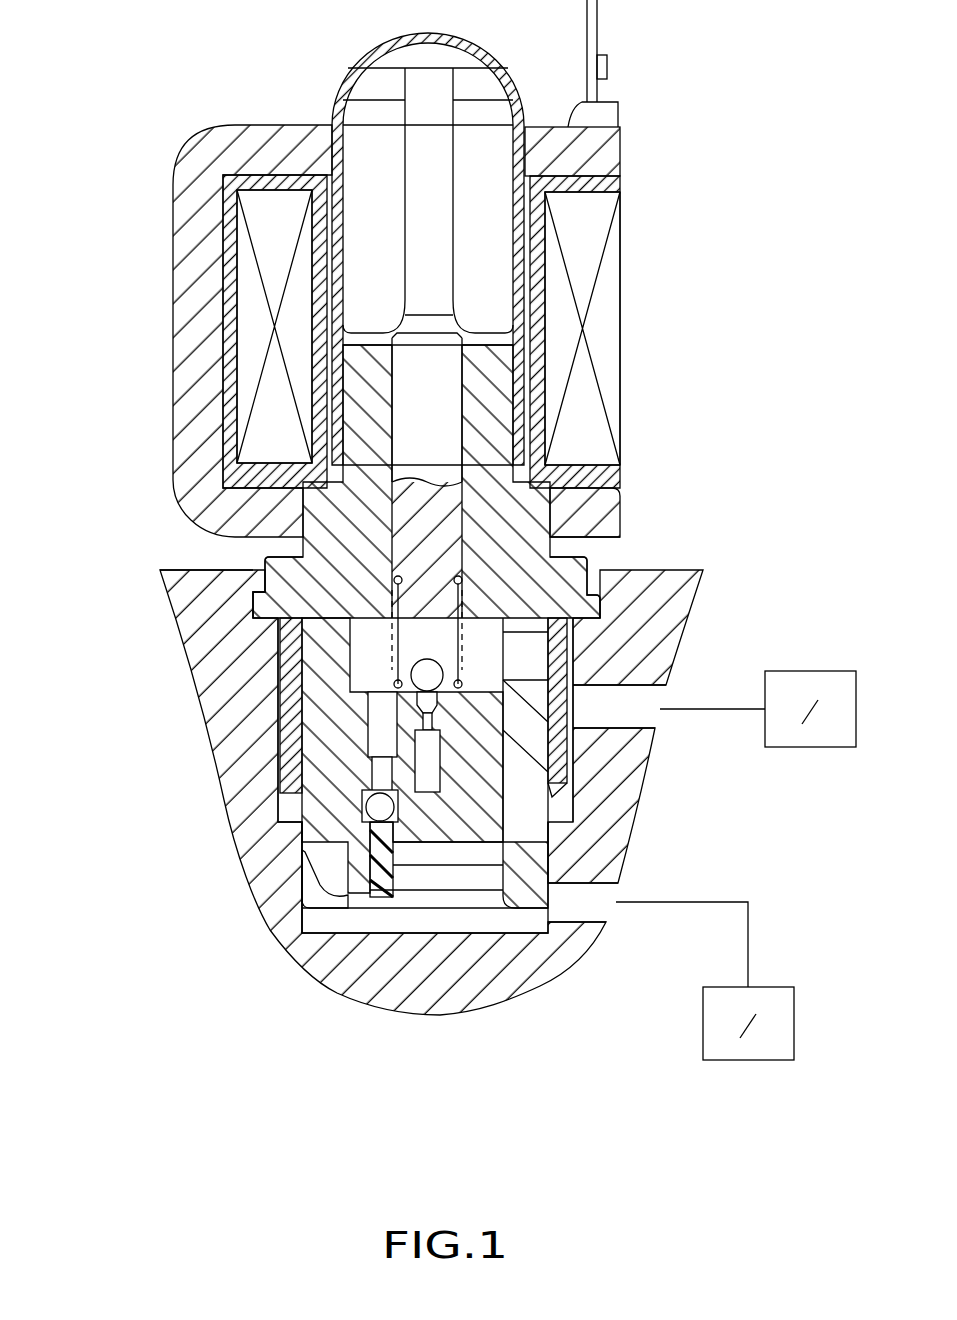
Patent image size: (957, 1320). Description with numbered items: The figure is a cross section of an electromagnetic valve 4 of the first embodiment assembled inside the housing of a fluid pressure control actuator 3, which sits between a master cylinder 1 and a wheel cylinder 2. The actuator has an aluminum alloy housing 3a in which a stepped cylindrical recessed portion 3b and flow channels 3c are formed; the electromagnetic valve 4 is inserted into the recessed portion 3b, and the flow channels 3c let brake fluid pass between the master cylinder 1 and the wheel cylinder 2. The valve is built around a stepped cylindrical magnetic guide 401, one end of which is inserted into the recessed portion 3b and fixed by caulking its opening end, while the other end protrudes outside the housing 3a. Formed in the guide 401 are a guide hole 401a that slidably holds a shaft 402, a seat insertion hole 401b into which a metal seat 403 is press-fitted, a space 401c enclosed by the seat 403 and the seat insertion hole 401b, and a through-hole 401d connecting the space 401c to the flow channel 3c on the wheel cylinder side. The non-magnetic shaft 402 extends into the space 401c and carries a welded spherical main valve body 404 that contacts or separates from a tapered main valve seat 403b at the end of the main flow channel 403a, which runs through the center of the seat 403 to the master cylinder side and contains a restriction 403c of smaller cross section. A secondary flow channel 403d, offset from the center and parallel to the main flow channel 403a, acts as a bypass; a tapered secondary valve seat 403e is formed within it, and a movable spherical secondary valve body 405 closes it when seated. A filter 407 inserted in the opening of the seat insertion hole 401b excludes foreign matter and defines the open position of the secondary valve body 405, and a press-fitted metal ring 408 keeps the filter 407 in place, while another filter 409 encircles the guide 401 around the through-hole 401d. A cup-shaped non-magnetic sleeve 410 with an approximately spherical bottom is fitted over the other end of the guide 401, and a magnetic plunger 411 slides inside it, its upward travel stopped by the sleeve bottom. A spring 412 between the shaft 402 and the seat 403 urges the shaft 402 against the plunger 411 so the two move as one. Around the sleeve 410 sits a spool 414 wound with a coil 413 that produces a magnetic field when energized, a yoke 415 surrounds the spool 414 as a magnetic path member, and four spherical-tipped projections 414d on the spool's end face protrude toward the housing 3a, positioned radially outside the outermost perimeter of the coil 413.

The master cylinder 1 is at (794, 1022).
The wheel cylinder 2 is at (842, 671).
The fluid pressure control actuator 3 is at (160, 440).
The housing 3a is at (197, 592).
The recessed portion 3b is at (280, 650).
The flow channels 3c is at (645, 702).
The electromagnetic valve 4 is at (162, 302).
The guide 401 is at (495, 425).
The guide hole 401a is at (455, 400).
The seat insertion hole 401b is at (483, 905).
The space 401c is at (552, 557).
The through-hole 401d is at (520, 648).
The shaft 402 is at (450, 350).
The seat 403 is at (352, 750).
The main flow channel 403a is at (345, 777).
The main valve seat 403b is at (556, 700).
The restriction 403c is at (540, 737).
The secondary flow channel 403d is at (377, 720).
The secondary valve seat 403e is at (383, 808).
The main valve body 404 is at (411, 677).
The secondary valve body 405 is at (350, 858).
The filter 407 is at (357, 887).
The metal ring 408 is at (315, 920).
The filter 409 is at (296, 688).
The sleeve 410 is at (350, 86).
The plunger 411 is at (413, 87).
The spring 412 is at (300, 553).
The coil 413 is at (260, 213).
The spool 414 is at (278, 183).
The projections 414d is at (558, 482).
The yoke 415 is at (198, 257).